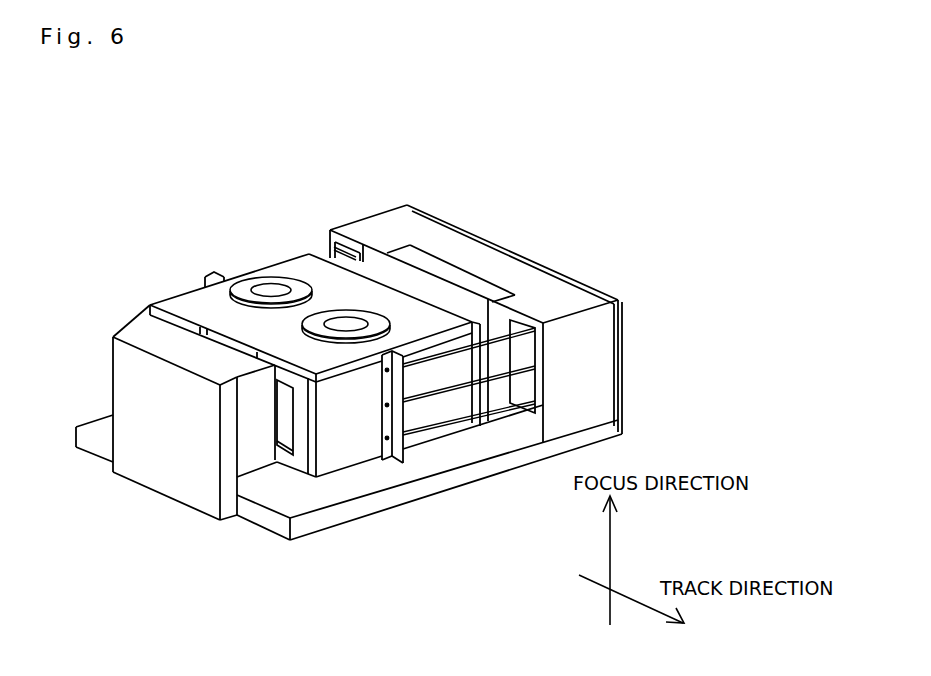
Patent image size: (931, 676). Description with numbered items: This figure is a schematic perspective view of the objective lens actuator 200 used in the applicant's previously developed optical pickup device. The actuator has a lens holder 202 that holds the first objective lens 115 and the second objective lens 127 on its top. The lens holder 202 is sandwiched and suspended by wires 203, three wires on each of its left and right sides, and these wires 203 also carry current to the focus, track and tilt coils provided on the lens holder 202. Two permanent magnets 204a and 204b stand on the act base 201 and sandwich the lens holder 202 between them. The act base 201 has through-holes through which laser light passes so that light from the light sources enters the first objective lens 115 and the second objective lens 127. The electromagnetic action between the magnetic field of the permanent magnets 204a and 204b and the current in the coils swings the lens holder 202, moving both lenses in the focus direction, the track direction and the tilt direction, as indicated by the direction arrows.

The objective lens actuator 200 is at (190, 158).
The act base 201 is at (350, 516).
The lens holder 202 is at (190, 302).
The wires 203 is at (330, 244).
The permanent magnet 204a is at (150, 337).
The permanent magnet 204b is at (385, 265).
The second objective lens 127 is at (262, 278).
The first objective lens 115 is at (356, 316).